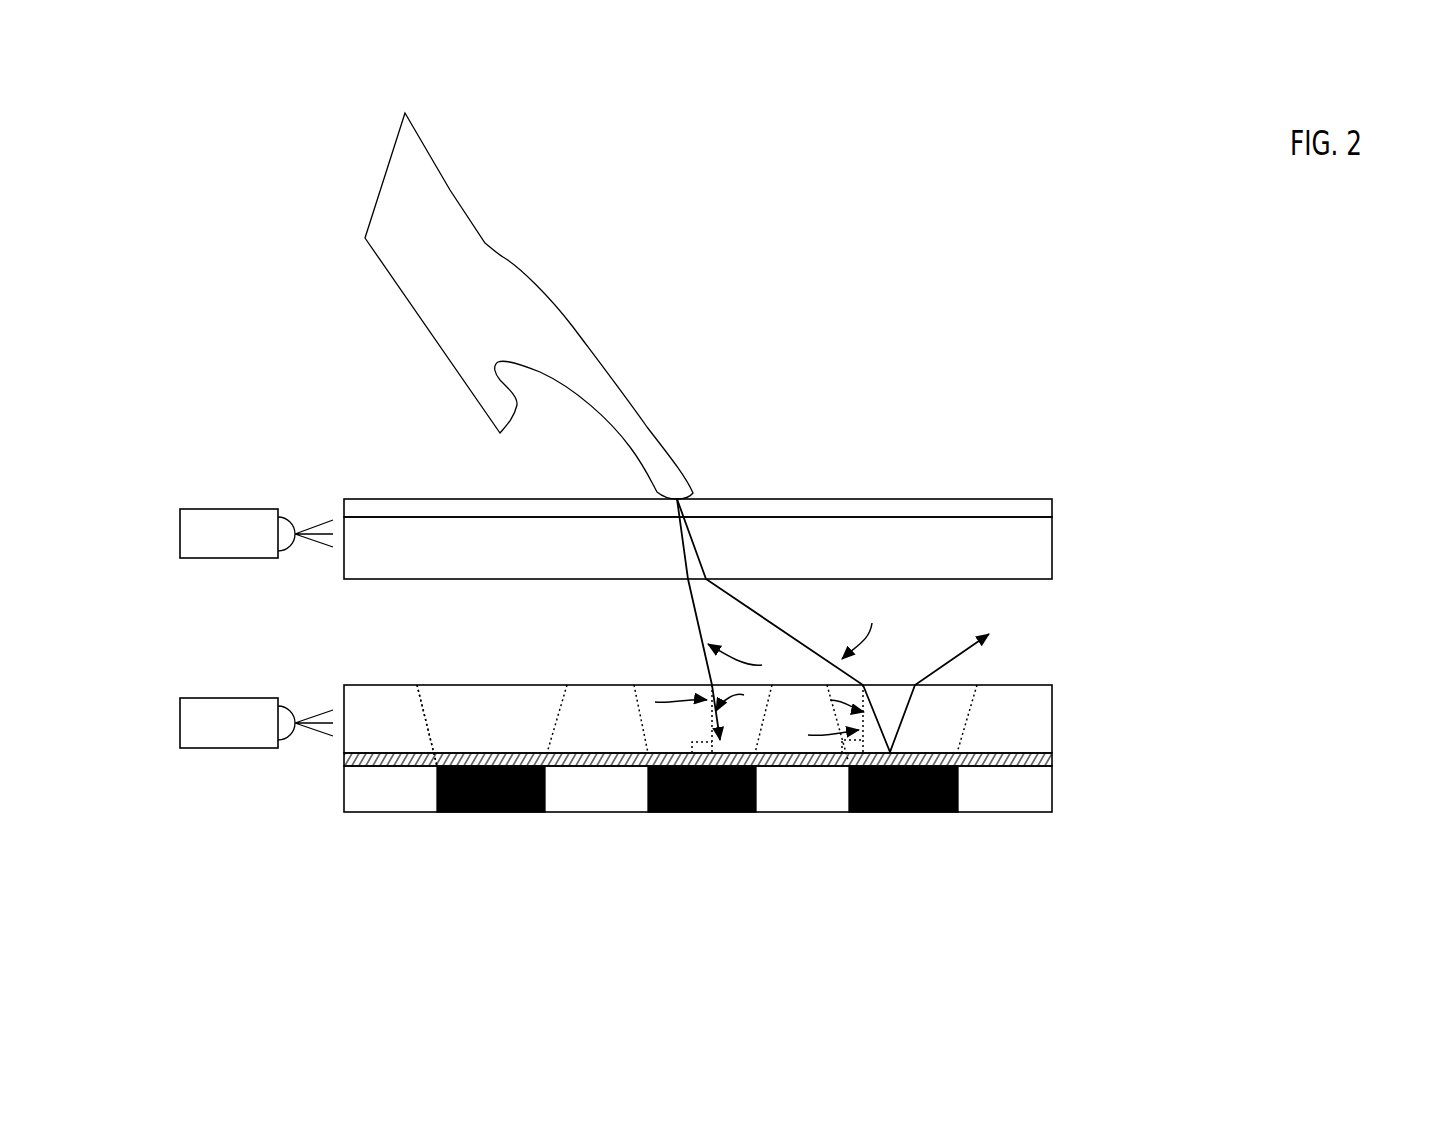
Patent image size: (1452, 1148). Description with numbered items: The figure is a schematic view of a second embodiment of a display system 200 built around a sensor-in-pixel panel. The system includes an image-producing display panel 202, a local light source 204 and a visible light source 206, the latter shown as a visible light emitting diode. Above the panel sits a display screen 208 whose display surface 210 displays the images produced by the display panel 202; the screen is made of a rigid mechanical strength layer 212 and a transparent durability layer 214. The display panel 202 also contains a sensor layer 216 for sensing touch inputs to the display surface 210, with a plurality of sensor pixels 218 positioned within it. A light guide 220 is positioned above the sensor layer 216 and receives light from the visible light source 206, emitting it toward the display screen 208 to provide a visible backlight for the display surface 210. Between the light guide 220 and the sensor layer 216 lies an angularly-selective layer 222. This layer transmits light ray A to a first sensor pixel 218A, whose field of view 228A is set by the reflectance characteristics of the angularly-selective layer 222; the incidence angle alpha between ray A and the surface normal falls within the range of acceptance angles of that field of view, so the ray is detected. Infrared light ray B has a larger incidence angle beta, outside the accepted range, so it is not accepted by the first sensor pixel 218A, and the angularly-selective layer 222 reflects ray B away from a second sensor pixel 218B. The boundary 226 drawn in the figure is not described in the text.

The display system 200 is at (1102, 316).
The image-producing display panel 202 is at (1252, 634).
The local light source 204 is at (202, 509).
The visible light source 206 is at (202, 698).
The display screen 208 is at (1158, 548).
The display surface 210 is at (840, 497).
The rigid mechanical strength layer 212 is at (1053, 548).
The transparent durability layer 214 is at (1053, 508).
The sensor layer 216 is at (1053, 787).
The sensor pixels 218 is at (500, 812).
The first sensor pixel 218A is at (698, 812).
The second sensor pixel 218B is at (898, 812).
The light guide 220 is at (1053, 705).
The angularly-selective layer 222 is at (1053, 762).
The light path boundary 226 is at (413, 682).
The field of view 228A is at (412, 707).